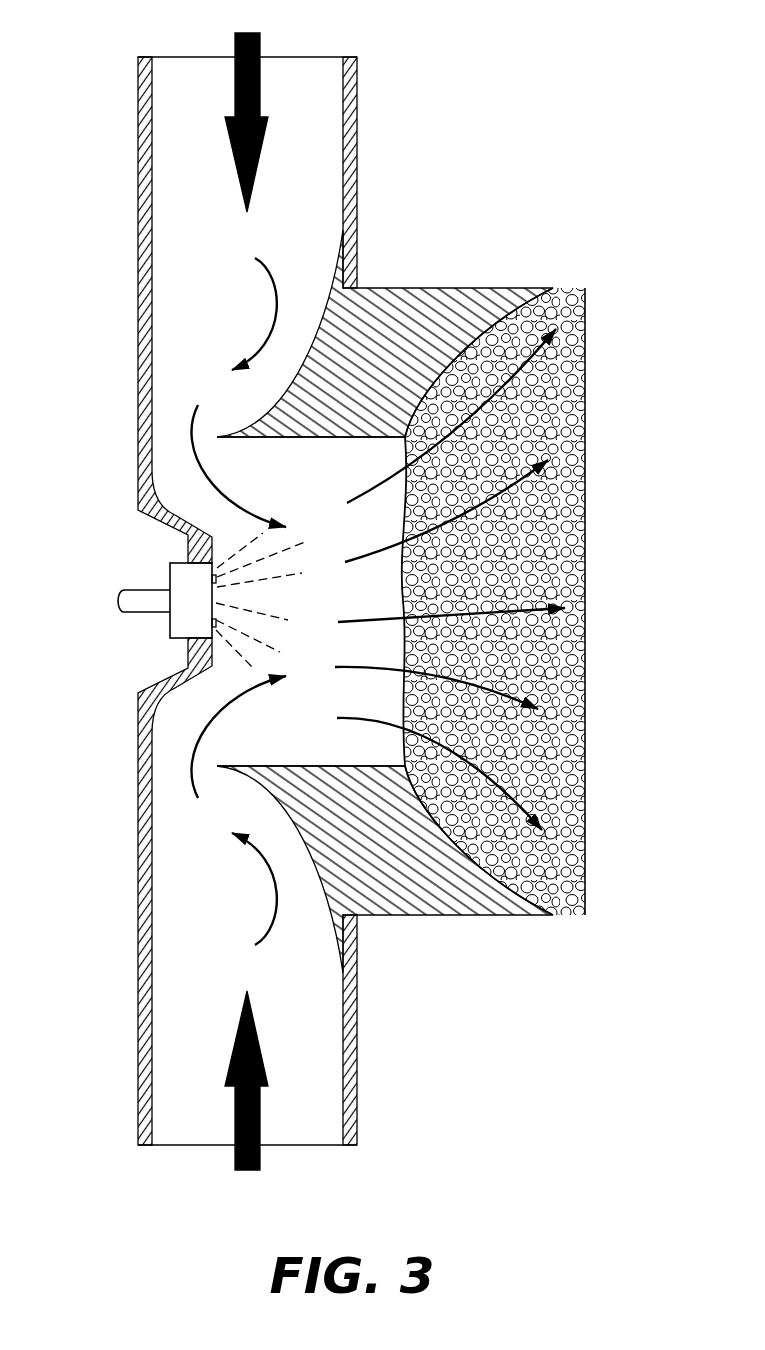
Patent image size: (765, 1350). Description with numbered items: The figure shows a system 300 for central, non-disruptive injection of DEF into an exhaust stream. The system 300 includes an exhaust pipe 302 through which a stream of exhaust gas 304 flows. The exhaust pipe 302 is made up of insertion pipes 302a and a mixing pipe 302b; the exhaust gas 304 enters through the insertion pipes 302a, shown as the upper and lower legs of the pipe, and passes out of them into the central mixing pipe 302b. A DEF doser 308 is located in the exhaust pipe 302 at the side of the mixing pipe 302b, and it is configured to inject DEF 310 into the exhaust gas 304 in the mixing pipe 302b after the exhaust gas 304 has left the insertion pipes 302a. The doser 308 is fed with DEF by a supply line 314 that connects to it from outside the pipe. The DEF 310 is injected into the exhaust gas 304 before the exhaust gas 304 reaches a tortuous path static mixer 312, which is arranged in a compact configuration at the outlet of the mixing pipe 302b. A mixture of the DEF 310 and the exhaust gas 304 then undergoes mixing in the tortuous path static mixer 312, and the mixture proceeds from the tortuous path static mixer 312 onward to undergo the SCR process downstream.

The system 300 is at (605, 49).
The exhaust pipe 302 is at (357, 130).
The insertion pipes 302a is at (180, 165).
The mixing pipe 302b is at (367, 457).
The exhaust gas 304 is at (262, 42).
The DEF doser 308 is at (168, 623).
The DEF 310 is at (267, 640).
The tortuous path static mixer 312 is at (585, 475).
The supply line 314 is at (138, 590).